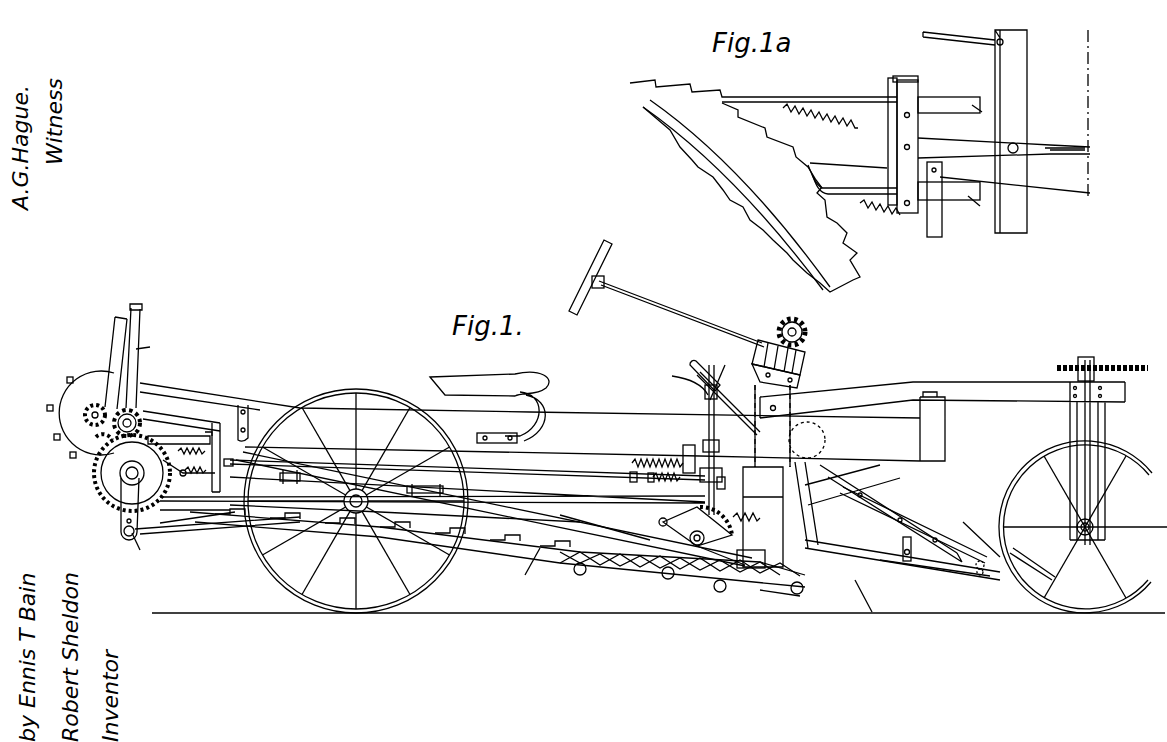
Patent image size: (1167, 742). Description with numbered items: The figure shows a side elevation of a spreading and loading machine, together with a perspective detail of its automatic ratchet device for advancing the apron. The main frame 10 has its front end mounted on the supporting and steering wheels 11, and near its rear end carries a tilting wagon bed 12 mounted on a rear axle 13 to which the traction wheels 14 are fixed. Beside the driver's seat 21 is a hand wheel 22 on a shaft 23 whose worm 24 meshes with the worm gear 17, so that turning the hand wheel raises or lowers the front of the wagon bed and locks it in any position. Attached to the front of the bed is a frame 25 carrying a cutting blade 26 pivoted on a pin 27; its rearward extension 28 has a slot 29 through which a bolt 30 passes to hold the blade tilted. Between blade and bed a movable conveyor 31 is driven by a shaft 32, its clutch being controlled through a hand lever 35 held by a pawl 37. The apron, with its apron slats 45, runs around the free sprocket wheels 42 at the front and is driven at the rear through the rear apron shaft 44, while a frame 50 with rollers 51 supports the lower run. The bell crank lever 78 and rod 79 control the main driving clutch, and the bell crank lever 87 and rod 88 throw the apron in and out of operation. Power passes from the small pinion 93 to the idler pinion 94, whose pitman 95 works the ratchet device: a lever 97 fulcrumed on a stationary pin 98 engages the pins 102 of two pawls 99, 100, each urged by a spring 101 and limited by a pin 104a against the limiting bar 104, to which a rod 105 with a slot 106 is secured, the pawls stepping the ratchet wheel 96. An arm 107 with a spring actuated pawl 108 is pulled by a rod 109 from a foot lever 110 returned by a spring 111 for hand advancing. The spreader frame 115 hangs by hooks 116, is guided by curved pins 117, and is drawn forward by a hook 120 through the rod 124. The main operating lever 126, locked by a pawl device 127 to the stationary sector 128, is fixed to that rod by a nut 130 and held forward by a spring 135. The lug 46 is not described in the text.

In FIG. 1, the main frame 10 is at (602, 468).
In FIG. 1, the supporting and steering wheels 11 is at (1120, 452).
In FIG. 1, the tilting wagon bed 12 is at (790, 491).
In FIG. 1, the rear axle 13 is at (355, 510).
In FIG. 1, the traction wheels 14 is at (356, 501).
In FIG. 1, the worm gear 17 is at (810, 338).
In FIG. 1, the driver's seat 21 is at (470, 380).
In FIG. 1, the hand wheel 22 is at (612, 245).
In FIG. 1, the shaft 23 is at (705, 320).
In FIG. 1, the worm 24 is at (812, 345).
In FIG. 1, the frame 25 is at (900, 510).
In FIG. 1, the cutting blade 26 is at (1030, 565).
In FIG. 1, the pin 27 is at (980, 575).
In FIG. 1, the rearward extension 28 is at (935, 568).
In FIG. 1, the slot 29 is at (903, 560).
In FIG. 1, the bolt 30 is at (861, 588).
In FIG. 1, the movable conveyor 31 is at (950, 520).
In FIG. 1, the shaft 32 is at (810, 440).
In FIG. 1, the hand lever 35 is at (727, 374).
In FIG. 1, the pawl 37 is at (697, 363).
In FIG. 1, the sprocket wheels 42 is at (800, 578).
In FIG. 1, the rear apron shaft 44 is at (120, 478).
In FIG. 1, the apron slats 45 is at (523, 559).
In FIG. 1, the conveyor lug 46 is at (505, 538).
In FIG. 1, the frame 50 is at (770, 592).
In FIG. 1, the rollers 51 is at (578, 574).
In FIG. 1, the bell crank lever 78 is at (410, 495).
In FIG. 1, the rod 79 is at (630, 550).
In FIG. 1, the bell crank lever 87 is at (290, 482).
In FIG. 1, the rod 88 is at (525, 567).
In FIG. 1, the small pinion 93 is at (85, 418).
In FIG. 1, the idler pinion 94 is at (137, 418).
In FIG. 1A, the idler pinion 94 is at (958, 40).
In FIG. 1, the pitman 95 is at (190, 420).
In FIG. 1, the ratchet wheel 96 is at (121, 495).
In FIG. 1A, the ratchet wheel 96 is at (763, 186).
In FIG. 1, the lever 97 is at (245, 412).
In FIG. 1A, the lever 97 is at (1020, 62).
In FIG. 1, the stationary pin 98 is at (220, 470).
In FIG. 1A, the stationary pin 98 is at (1017, 146).
In FIG. 1, the pawl 99 is at (178, 440).
In FIG. 1A, the pawl 99 is at (818, 98).
In FIG. 1, the pawl 100 is at (200, 480).
In FIG. 1A, the pawl 100 is at (855, 200).
In FIG. 1A, the spring 101 is at (905, 232).
In FIG. 1A, the pin 102 is at (965, 112).
In FIG. 1A, the limiting bar 104 is at (915, 92).
In FIG. 1A, the pin 104a is at (893, 95).
In FIG. 1, the rod 105 is at (548, 470).
In FIG. 1A, the rod 105 is at (1070, 140).
In FIG. 1A, the slot 106 is at (978, 152).
In FIG. 1, the arm 107 is at (141, 547).
In FIG. 1, the spring actuated pawl 108 is at (150, 532).
In FIG. 1, the rod 109 is at (240, 522).
In FIG. 1, the foot lever 110 is at (675, 430).
In FIG. 1, the spring 111 is at (636, 470).
In FIG. 1, the frame 115 is at (113, 362).
In FIG. 1, the hooks 116 is at (142, 310).
In FIG. 1, the curved pins 117 is at (152, 348).
In FIG. 1, the hook 120 is at (98, 445).
In FIG. 1, the rod 124 is at (603, 455).
In FIG. 1, the main operating lever 126 is at (740, 420).
In FIG. 1, the pawl device 127 is at (676, 378).
In FIG. 1, the stationary sector 128 is at (690, 560).
In FIG. 1, the nut 130 is at (722, 490).
In FIG. 1, the spring 135 is at (725, 532).